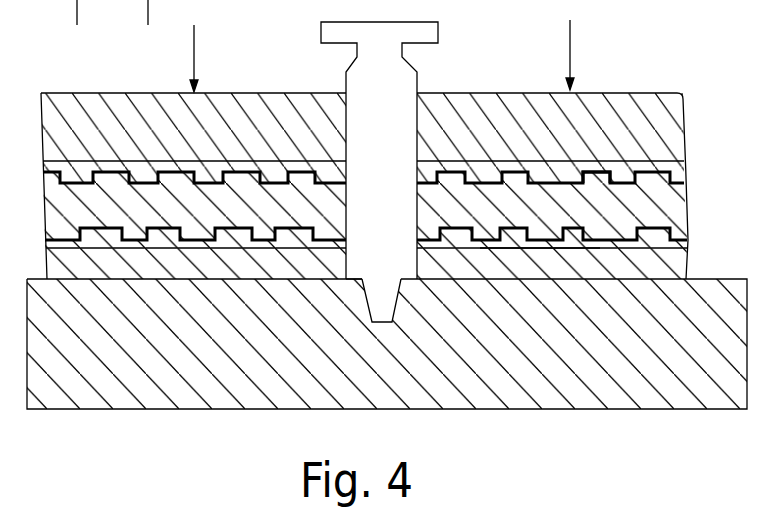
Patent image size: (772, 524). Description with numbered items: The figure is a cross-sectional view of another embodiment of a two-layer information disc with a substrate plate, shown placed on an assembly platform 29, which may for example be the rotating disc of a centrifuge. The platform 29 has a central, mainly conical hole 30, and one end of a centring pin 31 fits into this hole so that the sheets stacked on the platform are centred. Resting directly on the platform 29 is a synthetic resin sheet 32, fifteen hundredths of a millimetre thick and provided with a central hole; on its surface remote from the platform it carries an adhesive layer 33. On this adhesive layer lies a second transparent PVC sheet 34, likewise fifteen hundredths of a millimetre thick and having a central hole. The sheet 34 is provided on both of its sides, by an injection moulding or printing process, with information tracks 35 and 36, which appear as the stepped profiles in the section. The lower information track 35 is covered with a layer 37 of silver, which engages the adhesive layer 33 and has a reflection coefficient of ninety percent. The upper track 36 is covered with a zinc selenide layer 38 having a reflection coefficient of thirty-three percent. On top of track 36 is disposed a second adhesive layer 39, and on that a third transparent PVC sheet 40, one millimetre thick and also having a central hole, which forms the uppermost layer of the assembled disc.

The assembly platform 29 is at (640, 382).
The central conical hole 30 is at (367, 312).
The centring pin 31 is at (357, 258).
The synthetic resin sheet 32 is at (657, 260).
The adhesive layer 33 is at (514, 232).
The second transparent PVC sheet 34 is at (662, 203).
The information track 35 is at (549, 233).
The information track 36 is at (624, 187).
The Ag layer 37 is at (648, 215).
The zinc selenide layer 38 is at (594, 166).
The second adhesive layer 39 is at (542, 166).
The third transparent PVC sheet 40 is at (478, 108).